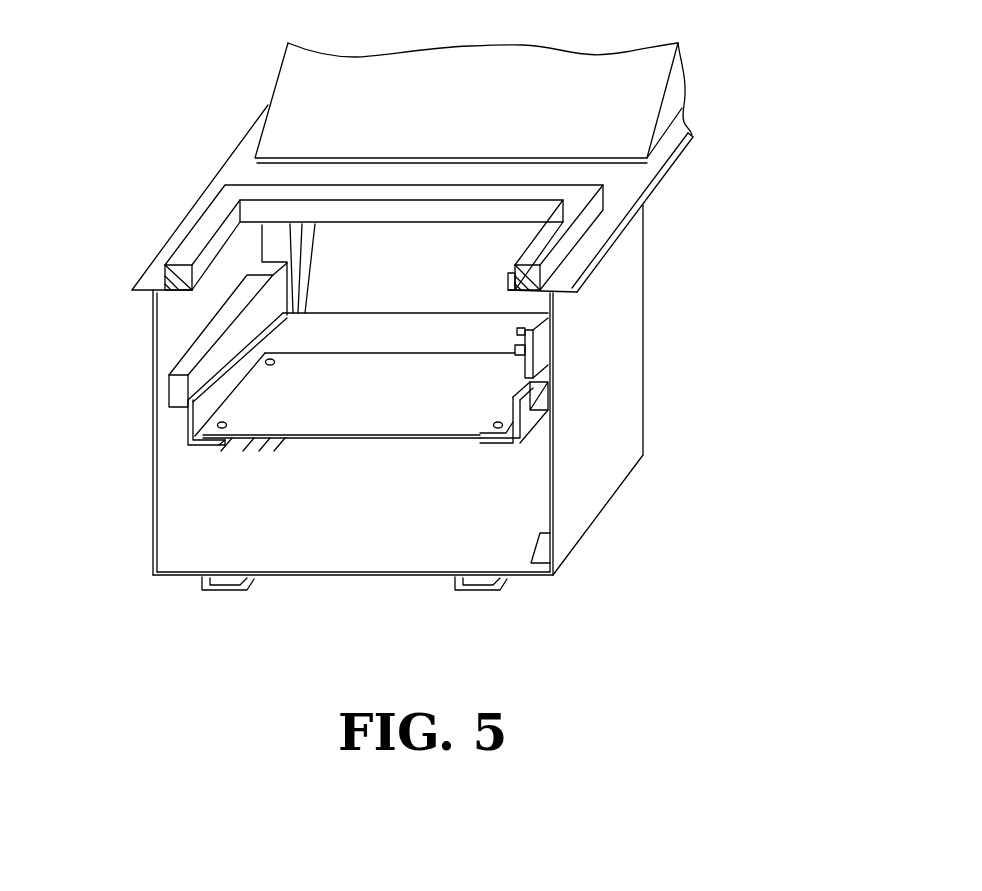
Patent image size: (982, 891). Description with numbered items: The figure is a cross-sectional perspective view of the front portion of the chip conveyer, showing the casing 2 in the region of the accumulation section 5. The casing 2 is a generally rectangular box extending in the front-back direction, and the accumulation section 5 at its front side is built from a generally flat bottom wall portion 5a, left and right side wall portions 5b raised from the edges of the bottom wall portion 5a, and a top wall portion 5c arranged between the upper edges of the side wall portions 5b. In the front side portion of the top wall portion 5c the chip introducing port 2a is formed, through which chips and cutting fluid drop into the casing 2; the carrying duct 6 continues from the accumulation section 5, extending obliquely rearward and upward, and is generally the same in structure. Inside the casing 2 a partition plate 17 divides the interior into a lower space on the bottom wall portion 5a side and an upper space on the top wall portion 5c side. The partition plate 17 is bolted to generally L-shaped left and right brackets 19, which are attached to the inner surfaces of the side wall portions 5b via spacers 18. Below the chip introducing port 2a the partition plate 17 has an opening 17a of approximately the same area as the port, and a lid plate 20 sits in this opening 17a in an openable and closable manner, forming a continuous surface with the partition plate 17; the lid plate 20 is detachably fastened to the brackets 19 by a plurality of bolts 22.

The casing 2 is at (782, 105).
The chip introducing port 2a is at (213, 255).
The accumulation section 5 is at (652, 306).
The bottom wall portion 5a is at (357, 555).
The side wall portion 5b is at (153, 457).
The top wall portion 5c is at (627, 183).
The carrying duct 6 is at (268, 61).
The partition plate 17 is at (452, 325).
The opening 17a is at (220, 442).
The spacer 18 is at (183, 352).
The bracket 19 is at (183, 417).
The lid plate 20 is at (418, 422).
The bolt 22 is at (272, 364).